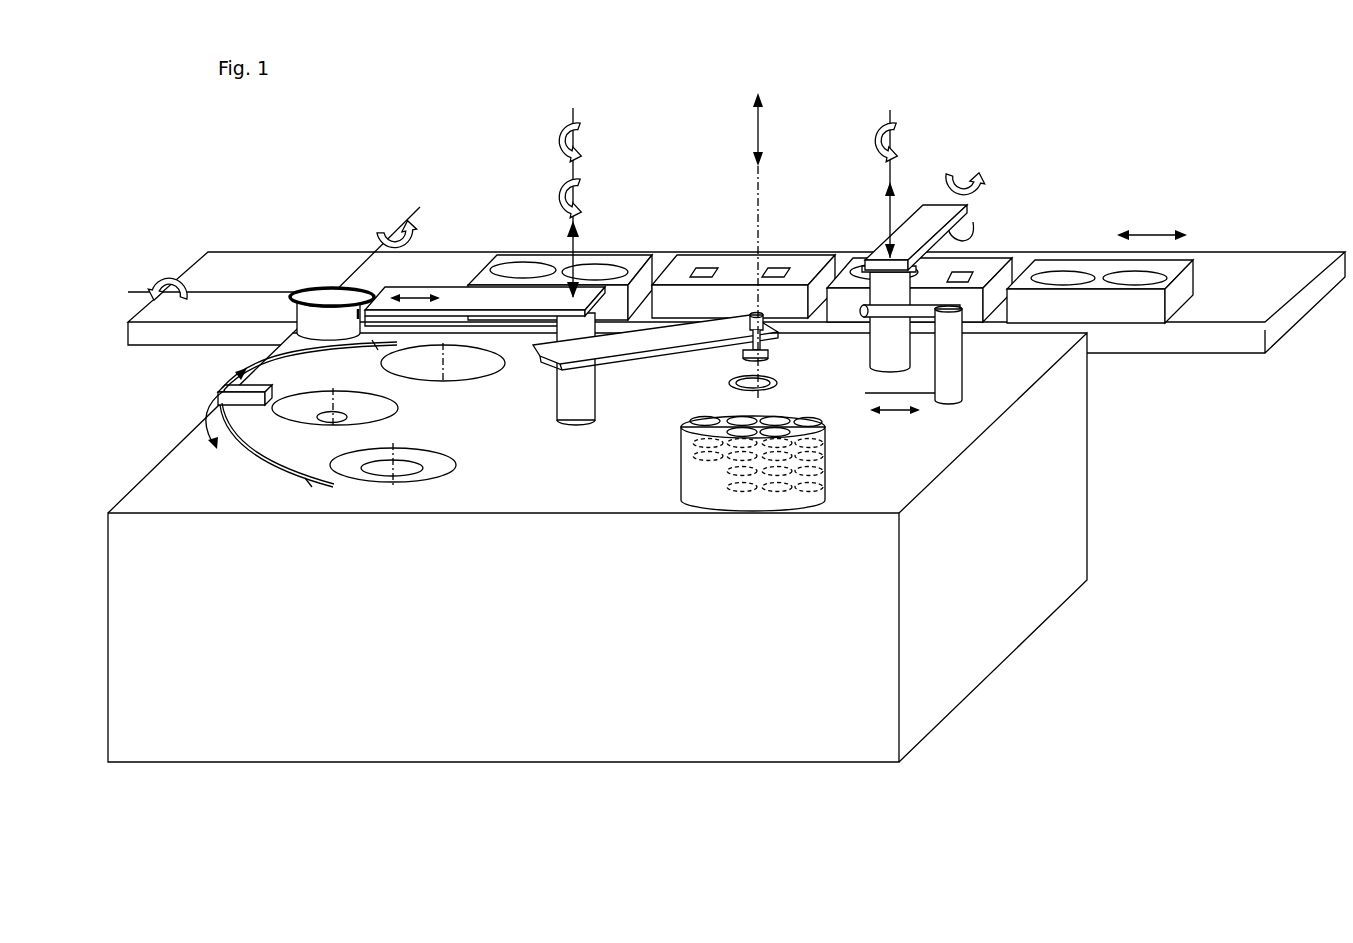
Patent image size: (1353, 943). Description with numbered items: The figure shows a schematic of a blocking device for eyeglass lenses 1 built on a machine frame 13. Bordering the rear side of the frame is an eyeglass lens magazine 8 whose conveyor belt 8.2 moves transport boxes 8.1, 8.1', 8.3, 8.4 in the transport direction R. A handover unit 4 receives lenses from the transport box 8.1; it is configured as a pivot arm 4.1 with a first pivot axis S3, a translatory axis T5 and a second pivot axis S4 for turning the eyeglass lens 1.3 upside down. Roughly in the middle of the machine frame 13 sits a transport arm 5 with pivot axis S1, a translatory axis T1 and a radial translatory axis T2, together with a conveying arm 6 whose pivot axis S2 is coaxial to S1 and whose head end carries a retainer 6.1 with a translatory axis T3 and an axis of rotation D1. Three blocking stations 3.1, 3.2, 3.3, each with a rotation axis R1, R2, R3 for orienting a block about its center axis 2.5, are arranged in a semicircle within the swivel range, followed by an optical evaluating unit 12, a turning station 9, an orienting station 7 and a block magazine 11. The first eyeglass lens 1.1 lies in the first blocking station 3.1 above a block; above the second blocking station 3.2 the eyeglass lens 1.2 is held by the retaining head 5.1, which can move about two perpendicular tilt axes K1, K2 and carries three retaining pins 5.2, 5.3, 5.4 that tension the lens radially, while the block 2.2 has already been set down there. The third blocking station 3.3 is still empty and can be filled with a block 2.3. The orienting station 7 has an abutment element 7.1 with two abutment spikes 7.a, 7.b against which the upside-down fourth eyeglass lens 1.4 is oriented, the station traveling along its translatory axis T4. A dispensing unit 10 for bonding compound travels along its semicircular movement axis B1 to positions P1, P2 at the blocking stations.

The eyeglass lens 1 is at (518, 262).
The first eyeglass lens 1.1 is at (408, 468).
The eyeglass lens 1.2 is at (326, 280).
The eyeglass lens 1.3 is at (972, 227).
The fourth eyeglass lens 1.4 is at (857, 265).
The block 2.2 is at (347, 416).
The block 2.3 is at (683, 422).
The center axis of the block 2.5 is at (330, 412).
The first blocking station 3.1 is at (466, 477).
The second blocking station 3.2 is at (318, 430).
The third blocking station 3.3 is at (482, 384).
The handover unit 4 is at (910, 130).
The pivot arm 4.1 is at (930, 210).
The transport arm 5 is at (483, 298).
The retaining head 5.1 is at (328, 278).
The retaining pin 5.2 is at (357, 291).
The retaining pin 5.3 is at (353, 316).
The retaining pin 5.4 is at (290, 302).
The conveying arm 6 is at (655, 342).
The retainer 6.1 is at (745, 352).
The orienting station 7 is at (962, 386).
The abutment element 7.1 is at (927, 327).
The abutment spike 7.a is at (860, 313).
The abutment spike 7.b is at (882, 317).
The eyeglass lens magazine 8 is at (1062, 170).
The transport box 8.1 is at (945, 268).
The transport box 8.1' is at (734, 239).
The conveyor belt 8.2 is at (455, 247).
The transport box 8.3 is at (647, 257).
The transport box 8.4 is at (1090, 265).
The turning station 9 is at (778, 394).
The dispensing unit 10 is at (218, 392).
The block magazine 11 is at (812, 493).
The optical evaluating unit 12 is at (627, 368).
The machine frame 13 is at (514, 634).
The movement axis B1 is at (200, 413).
The axis of rotation D1 is at (766, 378).
The tilt axis K1 is at (160, 280).
The tilt axis K2 is at (380, 228).
The position P1 is at (305, 484).
The position P2 is at (372, 350).
The transport direction R is at (1155, 232).
The rotation axis of blocking station R1 is at (393, 441).
The rotation axis of blocking station R2 is at (330, 390).
The rotation axis of blocking station R3 is at (440, 370).
The pivot axis S1 is at (585, 183).
The pivot axis S2 is at (585, 118).
The first pivot axis S3 is at (878, 125).
The second pivot axis S4 is at (948, 170).
The translatory axis T1 is at (578, 232).
The translatory axis T2 is at (425, 296).
The translatory axis T3 is at (756, 132).
The translatory axis T4 is at (900, 415).
The translatory axis T5 is at (888, 200).